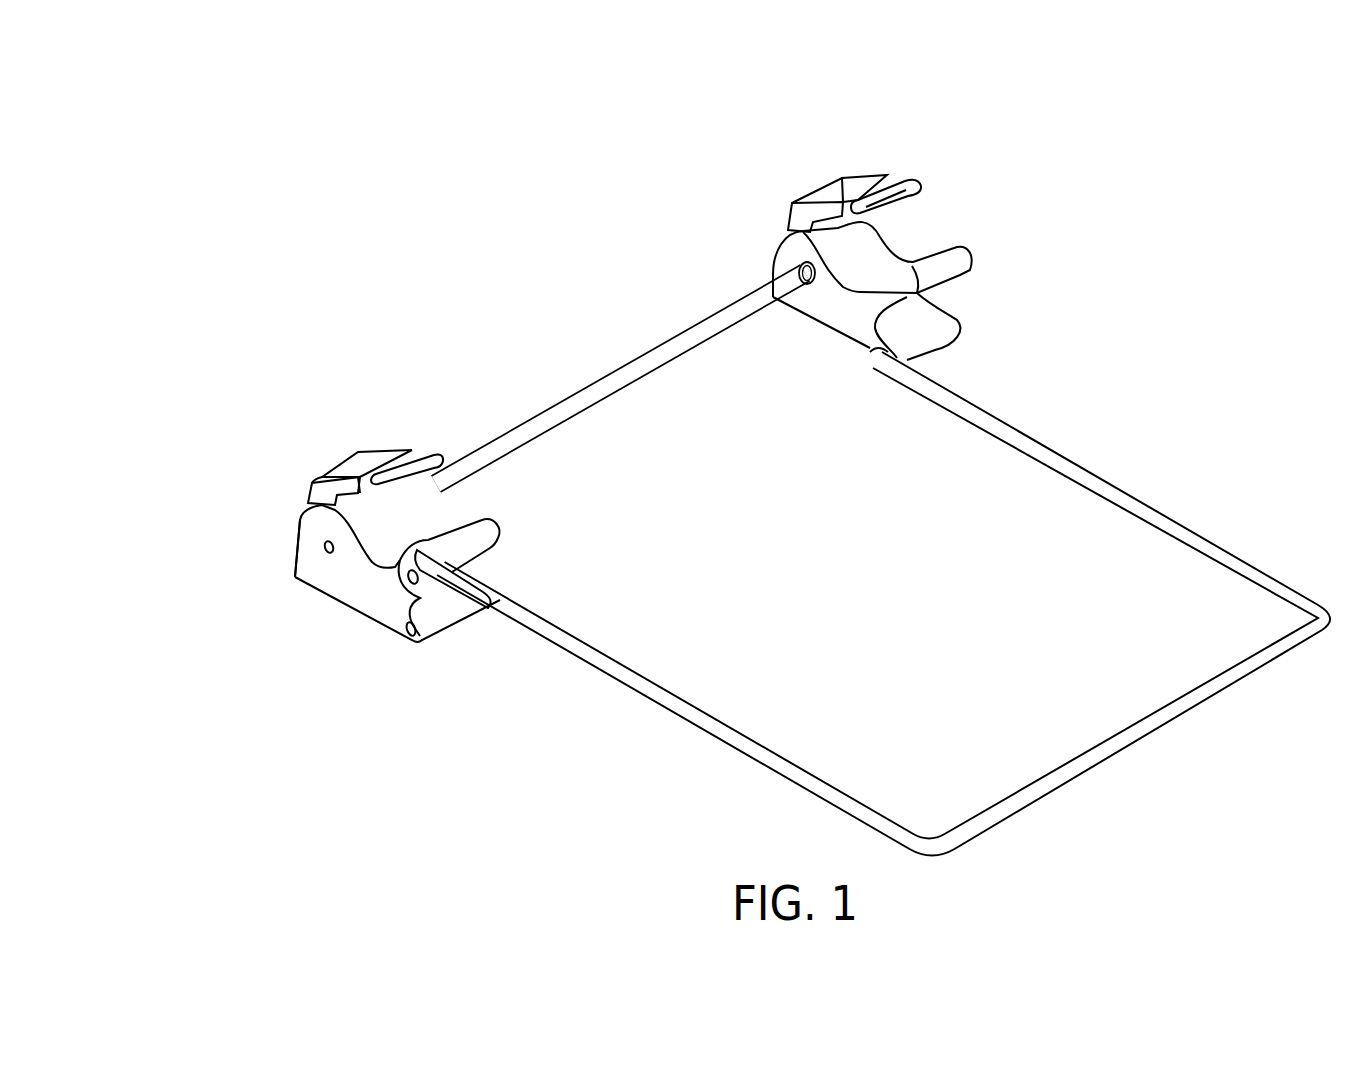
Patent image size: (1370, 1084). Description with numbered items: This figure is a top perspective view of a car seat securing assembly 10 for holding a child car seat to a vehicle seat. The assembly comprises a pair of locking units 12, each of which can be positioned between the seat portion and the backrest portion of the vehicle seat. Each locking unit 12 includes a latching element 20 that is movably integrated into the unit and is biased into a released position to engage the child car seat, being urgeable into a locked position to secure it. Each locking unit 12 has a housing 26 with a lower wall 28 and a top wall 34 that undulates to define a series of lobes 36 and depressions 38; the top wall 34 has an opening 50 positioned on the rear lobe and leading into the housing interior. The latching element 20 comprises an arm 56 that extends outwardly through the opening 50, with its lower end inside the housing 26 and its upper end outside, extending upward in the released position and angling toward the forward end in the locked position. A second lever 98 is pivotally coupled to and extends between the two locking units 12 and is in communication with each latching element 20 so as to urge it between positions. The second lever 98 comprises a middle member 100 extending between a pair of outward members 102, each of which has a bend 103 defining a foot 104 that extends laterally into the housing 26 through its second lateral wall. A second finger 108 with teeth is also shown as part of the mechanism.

The car seat securing assembly 10 is at (552, 205).
The locking unit 12 is at (992, 250).
The latching element 20 is at (882, 155).
The housing 26 is at (296, 580).
The lower wall 28 is at (372, 622).
The top wall 34 is at (410, 540).
The lobes 36 is at (500, 530).
The depressions 38 is at (385, 522).
The opening 50 is at (298, 509).
The arm 56 is at (834, 172).
The second lever 98 is at (757, 768).
The middle member 100 is at (1135, 743).
The outward members 102 is at (1141, 495).
The bend 103 is at (884, 353).
The foot 104 is at (863, 350).
The second finger 108 is at (568, 406).